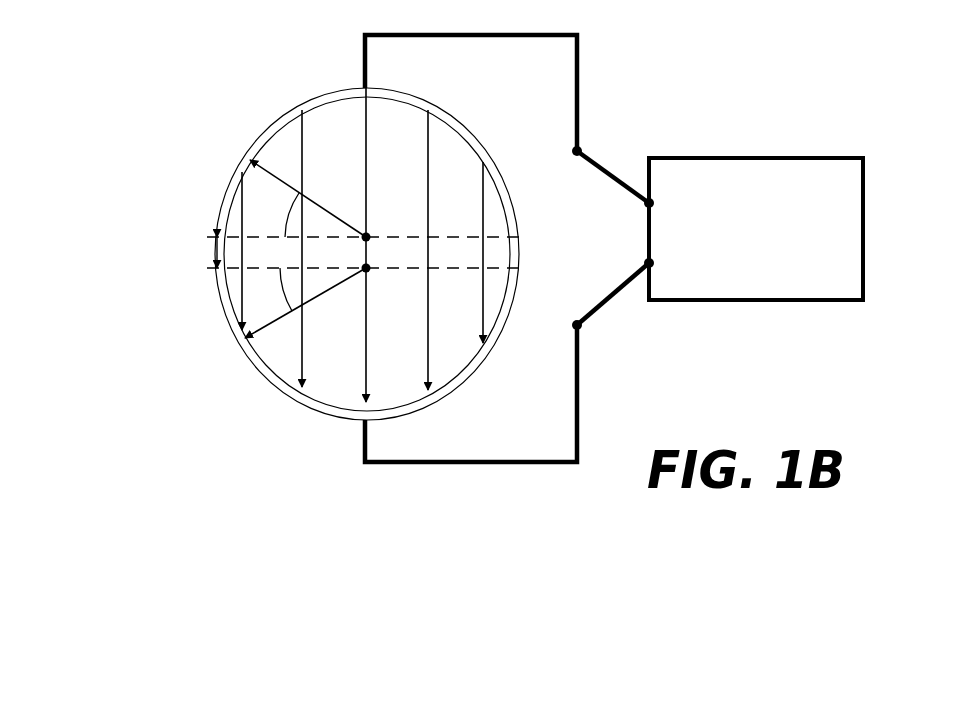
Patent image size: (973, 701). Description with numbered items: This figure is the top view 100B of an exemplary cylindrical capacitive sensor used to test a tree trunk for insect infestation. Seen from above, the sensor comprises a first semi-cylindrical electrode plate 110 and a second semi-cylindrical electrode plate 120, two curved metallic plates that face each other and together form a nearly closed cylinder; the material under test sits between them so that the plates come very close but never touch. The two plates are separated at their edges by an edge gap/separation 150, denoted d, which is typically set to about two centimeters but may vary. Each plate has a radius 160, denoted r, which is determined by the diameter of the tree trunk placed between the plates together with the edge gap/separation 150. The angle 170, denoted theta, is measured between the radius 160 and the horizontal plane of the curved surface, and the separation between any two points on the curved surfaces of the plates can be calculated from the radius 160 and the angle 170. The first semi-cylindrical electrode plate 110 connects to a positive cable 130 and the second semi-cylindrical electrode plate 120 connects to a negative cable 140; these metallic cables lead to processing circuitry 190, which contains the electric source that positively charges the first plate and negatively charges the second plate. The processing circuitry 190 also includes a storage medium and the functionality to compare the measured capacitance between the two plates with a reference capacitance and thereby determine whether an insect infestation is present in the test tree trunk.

The top view 100B is at (362, 300).
The first semi-cylindrical electrode plate 110 is at (315, 97).
The second semi-cylindrical electrode plate 120 is at (253, 377).
The positive cable 130 is at (579, 122).
The negative cable 140 is at (579, 390).
The edge gap/separation 150 is at (210, 257).
The radius 160 is at (295, 185).
The angle θ 170 is at (367, 228).
The processing circuitry 190 is at (756, 229).